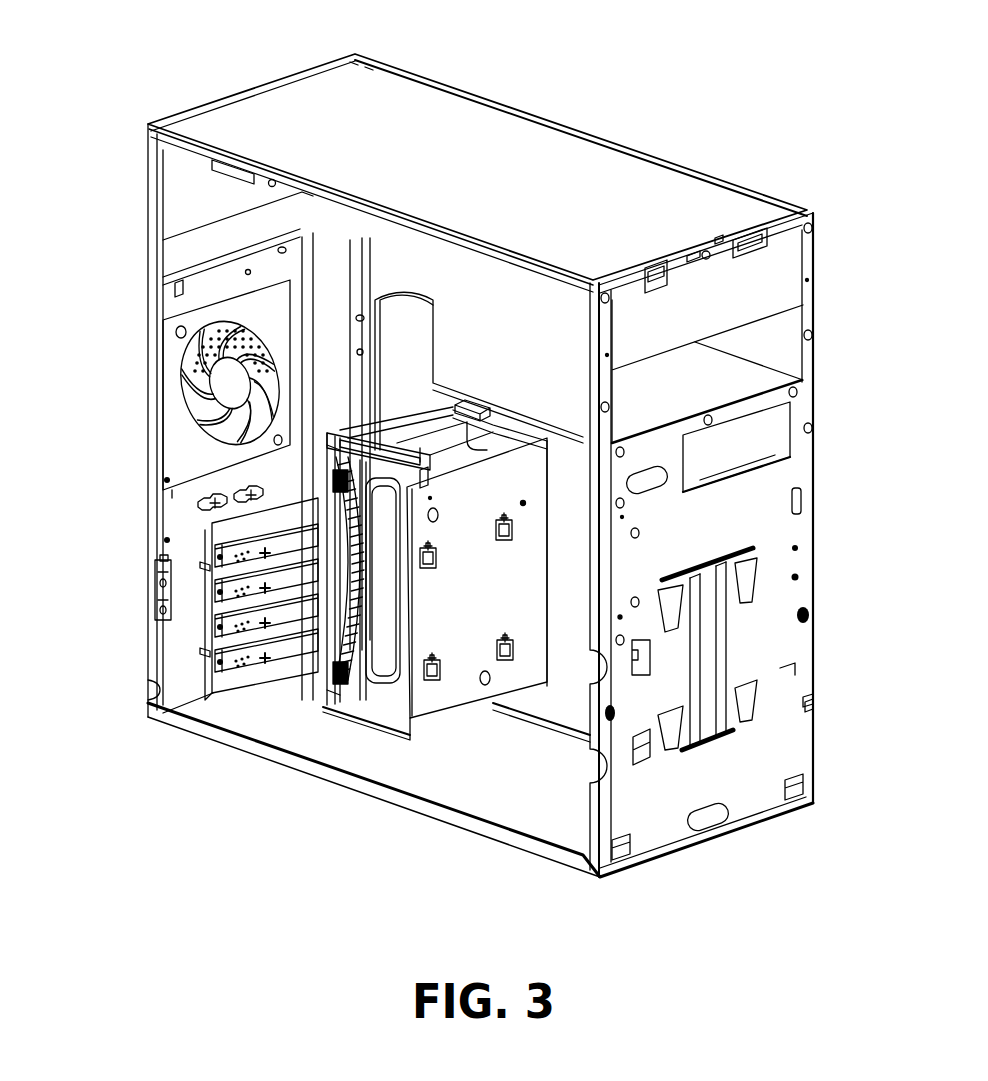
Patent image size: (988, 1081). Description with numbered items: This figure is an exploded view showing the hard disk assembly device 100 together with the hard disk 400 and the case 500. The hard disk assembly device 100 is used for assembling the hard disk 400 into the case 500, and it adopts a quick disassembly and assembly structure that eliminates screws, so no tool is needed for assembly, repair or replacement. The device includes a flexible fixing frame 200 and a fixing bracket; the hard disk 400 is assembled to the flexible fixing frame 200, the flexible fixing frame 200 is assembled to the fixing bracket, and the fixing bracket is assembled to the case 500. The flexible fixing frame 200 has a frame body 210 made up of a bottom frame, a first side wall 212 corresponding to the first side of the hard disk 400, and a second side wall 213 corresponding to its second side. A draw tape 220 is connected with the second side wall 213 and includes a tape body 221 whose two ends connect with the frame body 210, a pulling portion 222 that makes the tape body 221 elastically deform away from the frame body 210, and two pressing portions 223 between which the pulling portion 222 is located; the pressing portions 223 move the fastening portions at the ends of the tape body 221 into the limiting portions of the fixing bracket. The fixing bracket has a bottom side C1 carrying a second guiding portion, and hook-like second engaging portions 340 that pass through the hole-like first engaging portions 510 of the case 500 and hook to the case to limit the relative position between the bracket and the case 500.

The case 500 is at (398, 100).
The frame body 210 is at (446, 476).
The first side wall 212 is at (474, 394).
The second side wall 213 is at (280, 573).
The draw tape 220 is at (302, 638).
The tape body 221 is at (335, 506).
The pulling portion 222 is at (310, 672).
The pressing portions 223 is at (335, 463).
The flexible fixing frame 200 is at (302, 623).
The hard disk 400 is at (383, 742).
The hard disk assembly device 100 is at (431, 673).
The second engaging portions 340 is at (492, 542).
The first engaging portions 510 is at (680, 608).
The bottom side C1 is at (473, 588).